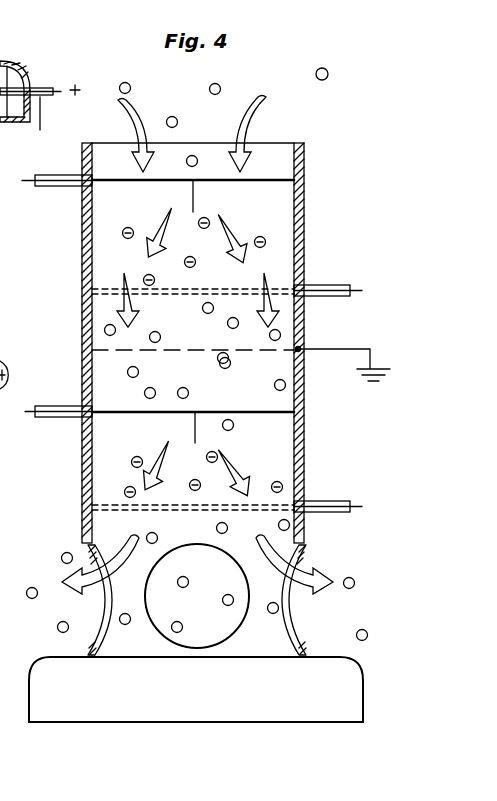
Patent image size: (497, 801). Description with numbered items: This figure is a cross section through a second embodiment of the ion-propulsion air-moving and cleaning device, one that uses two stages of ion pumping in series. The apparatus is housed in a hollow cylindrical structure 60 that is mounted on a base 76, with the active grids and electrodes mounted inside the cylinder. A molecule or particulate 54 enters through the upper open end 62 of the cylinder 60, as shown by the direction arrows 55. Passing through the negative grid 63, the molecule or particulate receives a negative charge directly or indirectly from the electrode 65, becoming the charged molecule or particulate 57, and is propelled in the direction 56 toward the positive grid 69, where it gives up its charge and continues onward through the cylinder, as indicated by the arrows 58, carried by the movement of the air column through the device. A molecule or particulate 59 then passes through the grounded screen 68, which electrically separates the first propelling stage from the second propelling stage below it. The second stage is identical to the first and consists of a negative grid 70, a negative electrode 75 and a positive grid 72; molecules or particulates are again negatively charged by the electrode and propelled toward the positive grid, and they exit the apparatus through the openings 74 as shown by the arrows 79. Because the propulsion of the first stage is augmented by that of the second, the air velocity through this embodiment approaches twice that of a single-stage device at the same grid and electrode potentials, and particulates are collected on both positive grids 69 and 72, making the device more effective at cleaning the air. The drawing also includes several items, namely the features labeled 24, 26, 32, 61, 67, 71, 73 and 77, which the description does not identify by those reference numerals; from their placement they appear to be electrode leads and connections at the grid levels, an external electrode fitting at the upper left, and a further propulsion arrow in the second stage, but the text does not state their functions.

The electrode 24 is at (40, 61).
The insulator cap 26 is at (27, 71).
The lead 32 is at (41, 127).
The molecule or particulate 54 is at (326, 80).
The direction arrows 55 is at (259, 108).
The direction of propulsion 56 is at (229, 222).
The charged molecule or particulate 57 is at (207, 219).
The arrows 58 is at (272, 297).
The molecule or particulate 59 is at (227, 324).
The hollow cylindrical structure 60 is at (305, 202).
The electrode 61 is at (51, 188).
The upper open end 62 is at (202, 142).
The negative grid 63 is at (112, 178).
The electrode 65 is at (192, 194).
The electrode 67 is at (331, 282).
The grounded screen 68 is at (97, 348).
The positive grid 69 is at (108, 289).
The negative grid 70 is at (151, 404).
The electrode 71 is at (54, 420).
The positive grid 72 is at (118, 505).
The electrode 73 is at (331, 499).
The openings 74 is at (292, 617).
The negative electrode 75 is at (193, 425).
The base 76 is at (177, 700).
The particle path arrow 77 is at (226, 448).
The arrows 79 is at (300, 572).